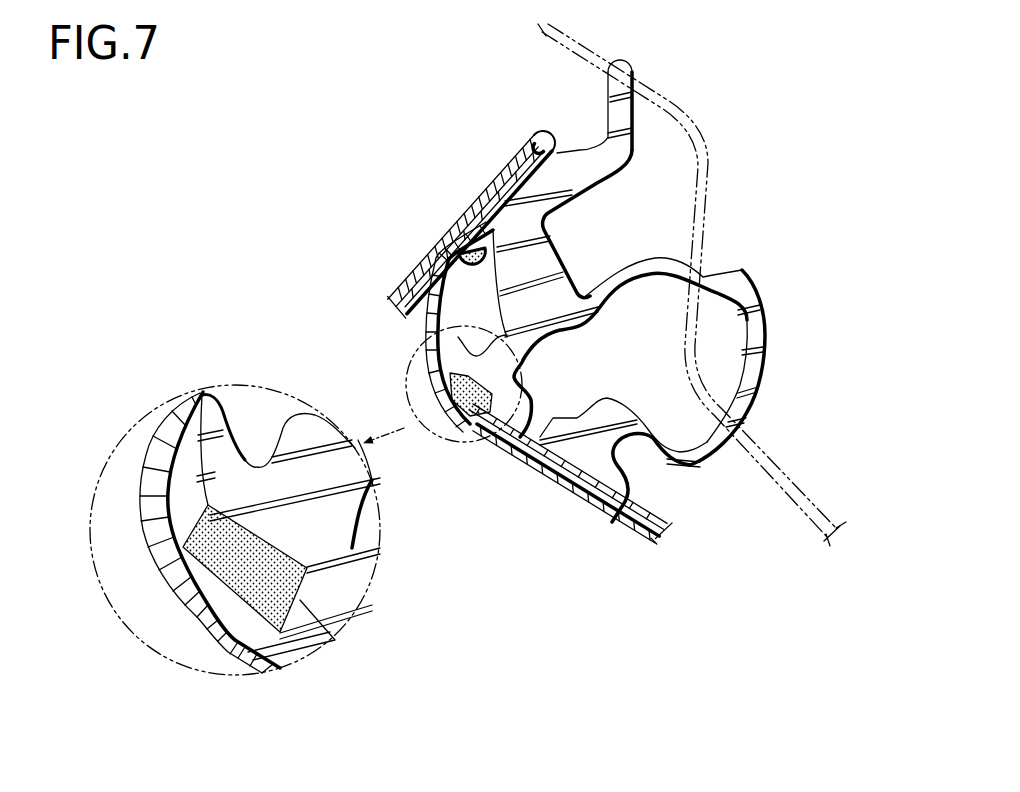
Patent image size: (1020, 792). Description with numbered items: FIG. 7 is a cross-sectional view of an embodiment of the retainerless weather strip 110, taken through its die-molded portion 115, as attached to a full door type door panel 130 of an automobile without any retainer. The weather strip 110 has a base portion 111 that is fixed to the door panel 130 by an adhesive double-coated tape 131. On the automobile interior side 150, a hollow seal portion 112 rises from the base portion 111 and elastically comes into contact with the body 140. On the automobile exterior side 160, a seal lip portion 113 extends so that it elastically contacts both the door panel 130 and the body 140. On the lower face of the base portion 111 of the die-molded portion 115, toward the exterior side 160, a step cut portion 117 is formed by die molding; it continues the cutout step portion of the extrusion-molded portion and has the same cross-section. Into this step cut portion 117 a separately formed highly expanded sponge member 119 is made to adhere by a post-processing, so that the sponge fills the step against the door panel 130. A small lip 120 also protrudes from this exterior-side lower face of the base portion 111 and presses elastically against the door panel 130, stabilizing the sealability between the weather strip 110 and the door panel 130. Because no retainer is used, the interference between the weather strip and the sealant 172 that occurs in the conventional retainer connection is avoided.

The retainerless weather strip 110 is at (777, 299).
The base portion 111 is at (580, 457).
The hollow seal portion 112 is at (757, 373).
The seal lip portion 113 is at (608, 97).
The die-molded portion 115 is at (790, 288).
The step cut portion 117 is at (420, 382).
The highly expanded sponge member 119 is at (462, 410).
The small lip 120 is at (432, 343).
The door panel 130 is at (492, 192).
The adhesive double-coated tape 131 is at (537, 438).
The body 140 is at (698, 136).
The automobile interior side 150 is at (880, 177).
The automobile exterior side 160 is at (290, 177).
The sealant 172 is at (459, 254).